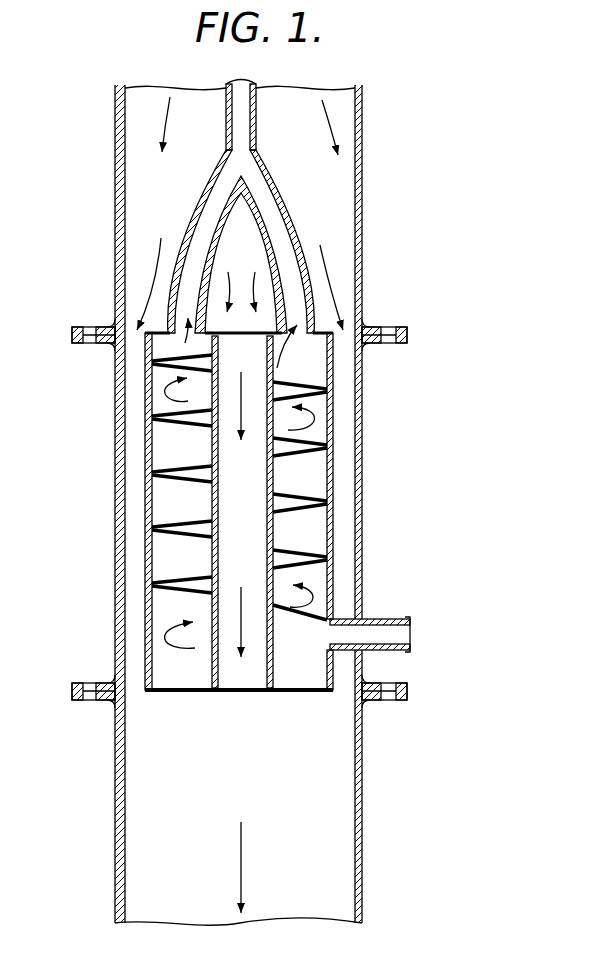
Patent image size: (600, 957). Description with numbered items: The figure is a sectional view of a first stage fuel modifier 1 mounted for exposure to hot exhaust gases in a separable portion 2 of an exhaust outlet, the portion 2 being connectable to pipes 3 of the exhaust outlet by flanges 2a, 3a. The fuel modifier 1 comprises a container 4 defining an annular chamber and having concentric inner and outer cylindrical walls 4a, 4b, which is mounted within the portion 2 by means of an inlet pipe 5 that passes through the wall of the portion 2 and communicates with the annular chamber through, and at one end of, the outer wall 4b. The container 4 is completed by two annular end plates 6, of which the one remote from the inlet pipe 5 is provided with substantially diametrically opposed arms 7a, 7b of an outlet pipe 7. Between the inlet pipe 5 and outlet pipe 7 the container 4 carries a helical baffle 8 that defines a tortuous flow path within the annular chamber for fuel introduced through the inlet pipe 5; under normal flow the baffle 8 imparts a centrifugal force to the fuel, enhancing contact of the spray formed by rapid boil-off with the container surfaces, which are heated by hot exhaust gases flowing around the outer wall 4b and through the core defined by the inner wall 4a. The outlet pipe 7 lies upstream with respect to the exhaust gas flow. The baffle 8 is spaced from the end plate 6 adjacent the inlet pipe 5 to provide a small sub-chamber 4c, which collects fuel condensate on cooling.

The first stage fuel modifier 1 is at (386, 448).
The portion 2 is at (363, 547).
The flange 2a is at (398, 345).
The pipes 3 is at (115, 190).
The flange 3a is at (448, 306).
The container 4 is at (343, 492).
The inner cylindrical wall 4a is at (256, 692).
The outer cylindrical wall 4b is at (146, 497).
The sub-chamber 4c is at (311, 690).
The inlet pipe 5 is at (385, 619).
The annular end plate 6 is at (250, 335).
The outlet pipe 7 is at (251, 131).
The arm of outlet pipe 7a is at (335, 204).
The arm of outlet pipe 7b is at (197, 220).
The helical baffle 8 is at (303, 447).